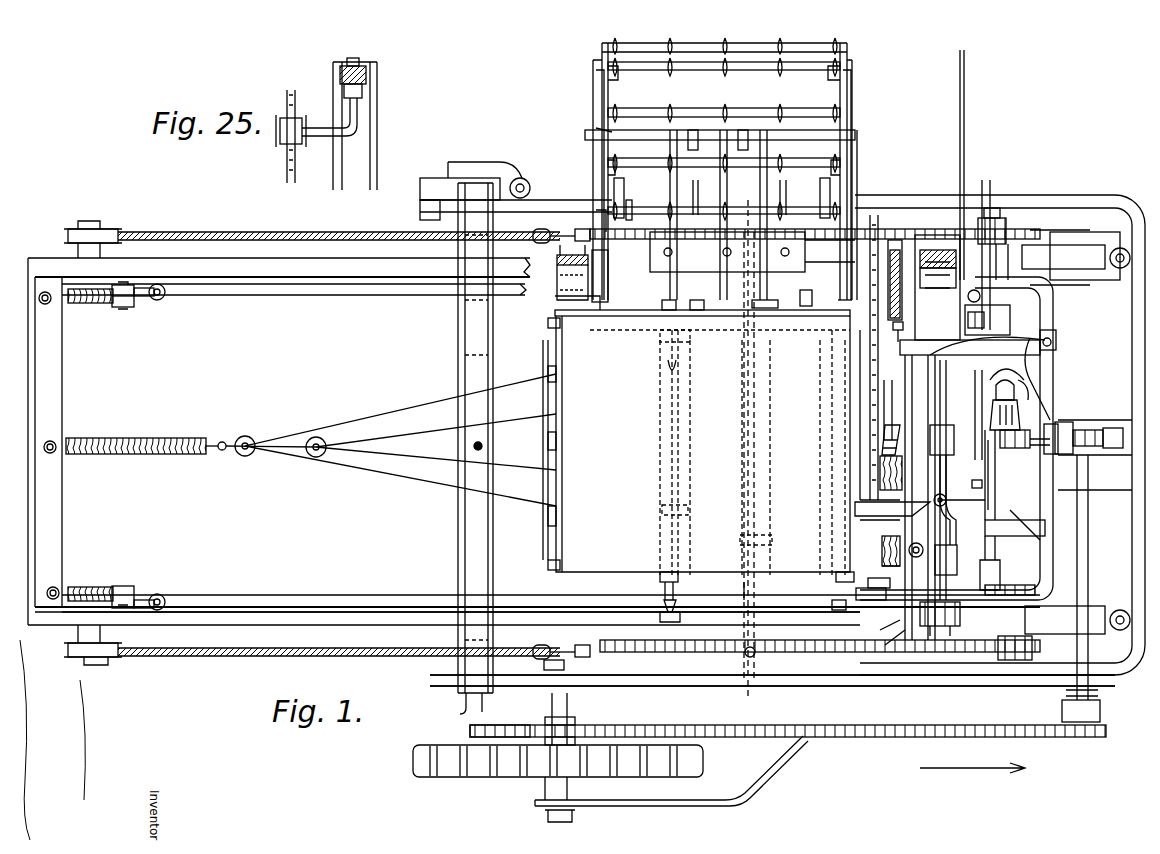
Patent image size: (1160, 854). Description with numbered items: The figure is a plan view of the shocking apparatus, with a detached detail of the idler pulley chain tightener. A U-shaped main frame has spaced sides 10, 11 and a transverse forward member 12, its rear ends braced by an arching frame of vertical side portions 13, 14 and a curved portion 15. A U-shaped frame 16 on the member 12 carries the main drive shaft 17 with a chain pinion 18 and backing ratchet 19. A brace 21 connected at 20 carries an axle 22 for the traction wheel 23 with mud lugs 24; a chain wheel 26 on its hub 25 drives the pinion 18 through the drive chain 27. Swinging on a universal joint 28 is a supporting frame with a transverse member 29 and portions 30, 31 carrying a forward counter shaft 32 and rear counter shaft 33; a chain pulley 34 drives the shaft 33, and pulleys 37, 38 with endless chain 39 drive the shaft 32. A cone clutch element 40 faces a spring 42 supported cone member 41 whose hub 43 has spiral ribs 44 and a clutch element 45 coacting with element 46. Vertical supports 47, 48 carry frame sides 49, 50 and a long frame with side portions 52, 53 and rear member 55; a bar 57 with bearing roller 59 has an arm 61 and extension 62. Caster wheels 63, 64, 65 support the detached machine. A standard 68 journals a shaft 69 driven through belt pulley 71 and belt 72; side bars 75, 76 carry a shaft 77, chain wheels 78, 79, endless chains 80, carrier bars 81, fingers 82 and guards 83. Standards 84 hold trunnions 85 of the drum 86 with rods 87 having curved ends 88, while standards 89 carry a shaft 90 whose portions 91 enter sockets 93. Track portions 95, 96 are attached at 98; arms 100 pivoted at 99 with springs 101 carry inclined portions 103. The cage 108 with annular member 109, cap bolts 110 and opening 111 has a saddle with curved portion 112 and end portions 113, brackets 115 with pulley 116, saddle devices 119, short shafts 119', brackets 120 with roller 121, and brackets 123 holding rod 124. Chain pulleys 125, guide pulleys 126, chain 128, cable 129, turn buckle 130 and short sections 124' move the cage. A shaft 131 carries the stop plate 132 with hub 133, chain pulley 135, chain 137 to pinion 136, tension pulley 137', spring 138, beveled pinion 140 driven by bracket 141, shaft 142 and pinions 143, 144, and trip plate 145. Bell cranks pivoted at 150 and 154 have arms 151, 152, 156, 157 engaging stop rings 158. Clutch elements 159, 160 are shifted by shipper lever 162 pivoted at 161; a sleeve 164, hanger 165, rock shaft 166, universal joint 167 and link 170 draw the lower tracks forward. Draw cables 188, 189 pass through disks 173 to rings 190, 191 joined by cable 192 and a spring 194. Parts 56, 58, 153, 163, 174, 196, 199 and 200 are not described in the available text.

In FIG. 1, the frame side 10 is at (552, 206).
In FIG. 1, the frame side 11 is at (735, 686).
In FIG. 1, the transverse forward member 12 is at (1140, 346).
In FIG. 1, the vertical side portion 13 is at (480, 178).
In FIG. 1, the vertical side portion 14 is at (462, 708).
In FIG. 1, the transverse upwardly curved portion 15 is at (460, 336).
In FIG. 1, the U-shaped frame 16 is at (1108, 400).
In FIG. 1, the main drive shaft 17 is at (1080, 538).
In FIG. 1, the chain pinion 18 is at (1090, 732).
In FIG. 1, the backing ratchet 19 is at (1100, 708).
In FIG. 1, the brace connection 20 is at (890, 686).
In FIG. 1, the brace 21 is at (776, 762).
In FIG. 1, the axle 22 is at (568, 702).
In FIG. 1, the traction wheel 23 is at (506, 778).
In FIG. 1, the mud lugs 24 is at (478, 780).
In FIG. 1, the hub 25 is at (576, 718).
In FIG. 1, the chain wheel 26 is at (522, 724).
In FIG. 1, the drive chain 27 is at (766, 724).
In FIG. 1, the universal joint 28 is at (1034, 444).
In FIG. 1, the transverse member 29 is at (1054, 352).
In FIG. 1, the rearwardly extending portion 30 is at (1008, 275).
In FIG. 1, the rearwardly extending portion 31 is at (1036, 602).
In FIG. 1, the forward counter shaft 32 is at (988, 550).
In FIG. 1, the rear counter shaft 33 is at (856, 466).
In FIG. 1, the chain pulley 34 is at (1110, 428).
In FIG. 1, the chain pulley 37 is at (873, 579).
In FIG. 1, the chain pulley 38 is at (1010, 586).
In FIG. 1, the endless chain 39 is at (939, 572).
In FIG. 1, the cone friction clutch element 40 is at (1027, 528).
In FIG. 1, the cone friction clutch member 41 is at (892, 513).
In FIG. 1, the spring 42 is at (886, 490).
In FIG. 1, the hub 43 is at (882, 548).
In FIG. 1, the spiral ribs 44 is at (882, 563).
In FIG. 1, the clutch element 45 is at (877, 626).
In FIG. 1, the opposing clutch element 46 is at (883, 638).
In FIG. 25, the vertical support 47 is at (340, 66).
In FIG. 1, the vertical support 47 is at (934, 250).
In FIG. 1, the vertical support 48 is at (950, 619).
In FIG. 25, the frame side 49 is at (372, 128).
In FIG. 1, the frame side 49 is at (956, 372).
In FIG. 25, the frame side 50 is at (336, 168).
In FIG. 1, the frame side 50 is at (936, 386).
In FIG. 1, the side portion 52 is at (352, 262).
In FIG. 1, the side portion 53 is at (345, 625).
In FIG. 1, the transverse member 55 is at (63, 380).
In FIG. 1, the gear 56 is at (1064, 420).
In FIG. 1, the bar 57 is at (981, 550).
In FIG. 1, the pin 58 is at (973, 574).
In FIG. 1, the bearing roller 59 is at (916, 543).
In FIG. 1, the arm 61 is at (991, 493).
In FIG. 1, the forwardly directed extension 62 is at (985, 482).
In FIG. 1, the caster wheel 63 is at (446, 168).
In FIG. 1, the caster wheel 64 is at (1076, 257).
In FIG. 1, the caster wheel 65 is at (1077, 620).
In FIG. 1, the standard 68 is at (554, 251).
In FIG. 1, the shaft 69 is at (776, 296).
In FIG. 1, the belt pulley 71 is at (903, 284).
In FIG. 1, the belt 72 is at (900, 250).
In FIG. 1, the side bar 75 is at (594, 84).
In FIG. 1, the side bar 76 is at (856, 88).
In FIG. 1, the shaft 77 is at (762, 84).
In FIG. 1, the chain wheel 78 is at (614, 300).
In FIG. 1, the chain wheel 79 is at (601, 52).
In FIG. 1, the endless chains 80 is at (626, 184).
In FIG. 1, the carrier bars 81 is at (746, 70).
In FIG. 1, the fingers 82 is at (722, 76).
In FIG. 1, the guards 83 is at (596, 110).
In FIG. 1, the standards 84 is at (600, 215).
In FIG. 1, the trunnions 85 is at (708, 250).
In FIG. 1, the drum 86 is at (717, 243).
In FIG. 1, the rods 87 is at (678, 204).
In FIG. 1, the curved ends 88 is at (640, 210).
In FIG. 1, the standards 89 is at (590, 136).
In FIG. 1, the shaft 90 is at (598, 136).
In FIG. 1, the diverging portion 91 is at (699, 184).
In FIG. 1, the sockets 93 is at (780, 252).
In FIG. 1, the horizontal portion 95 is at (762, 603).
In FIG. 1, the inclined portion 96 is at (350, 296).
In FIG. 1, the attachment 98 is at (163, 298).
In FIG. 1, the pivot 99 is at (116, 308).
In FIG. 1, the arms 100 is at (122, 283).
In FIG. 1, the spring 101 is at (88, 445).
In FIG. 1, the inclined portion 103 is at (138, 298).
In FIG. 1, the cage 108 is at (562, 310).
In FIG. 1, the annular member 109 is at (563, 336).
In FIG. 1, the cap bolts 110 is at (546, 322).
In FIG. 1, the opening 111 is at (638, 372).
In FIG. 1, the curved intermediate portion 112 is at (820, 478).
In FIG. 1, the vertical end portions 113 is at (800, 300).
In FIG. 1, the brackets 115 is at (867, 597).
In FIG. 1, the grooved guide pulley 116 is at (832, 608).
In FIG. 1, the saddle devices 119 is at (678, 452).
In FIG. 1, the short shafts 119' is at (690, 424).
In FIG. 1, the brackets 120 is at (660, 300).
In FIG. 1, the grooved roller 121 is at (698, 290).
In FIG. 1, the brackets 123 is at (770, 550).
In FIG. 1, the rod 124 is at (736, 456).
In FIG. 1, the short cable sections 124' is at (761, 450).
In FIG. 1, the chain pulleys 125 is at (1028, 220).
In FIG. 1, the guide pulleys 126 is at (92, 228).
In FIG. 1, the chain sections 128 is at (898, 229).
In FIG. 1, the cable 129 is at (284, 229).
In FIG. 1, the turn buckle 130 is at (556, 228).
In FIG. 1, the shaft 131 is at (945, 480).
In FIG. 1, the stop plate 132 is at (834, 354).
In FIG. 1, the hub 133 is at (854, 440).
In FIG. 1, the chain pulley 135 is at (884, 416).
In FIG. 1, the chain pinion 136 is at (894, 230).
In FIG. 25, the endless chain 137 is at (263, 139).
In FIG. 1, the endless chain 137 is at (862, 357).
In FIG. 25, the tension pulley 137' is at (267, 139).
In FIG. 1, the spring 138 is at (898, 428).
In FIG. 1, the beveled pinion 140 is at (980, 475).
In FIG. 1, the bracket 141 is at (898, 404).
In FIG. 1, the obliquely directed shaft 142 is at (1000, 390).
In FIG. 1, the beveled pinion 143 is at (1029, 393).
In FIG. 1, the beveled pinion 144 is at (1046, 340).
In FIG. 1, the trip plate 145 is at (988, 390).
In FIG. 1, the pivot 150 is at (934, 500).
In FIG. 1, the short arm 151 is at (968, 504).
In FIG. 1, the long arm 152 is at (957, 489).
In FIG. 1, the block 153 is at (943, 434).
In FIG. 1, the pivot 154 is at (1052, 342).
In FIG. 1, the arm 156 is at (987, 337).
In FIG. 1, the arm 157 is at (1040, 384).
In FIG. 1, the stop rings 158 is at (1055, 440).
In FIG. 1, the clutch element 159 is at (941, 309).
In FIG. 1, the opposing clutch element 160 is at (937, 287).
In FIG. 1, the pivot 161 is at (890, 328).
In FIG. 1, the shipper lever 162 is at (896, 341).
In FIG. 1, the bar 163 is at (970, 347).
In FIG. 1, the sleeve 164 is at (869, 372).
In FIG. 1, the hanger 165 is at (1010, 318).
In FIG. 1, the rock shaft 166 is at (965, 120).
In FIG. 1, the universal joint 167 is at (984, 210).
In FIG. 1, the link 170 is at (943, 338).
In FIG. 1, the disks 173 is at (542, 354).
In FIG. 1, the roller 174 is at (547, 370).
In FIG. 1, the draw cable 188 is at (390, 408).
In FIG. 1, the draw cable 189 is at (432, 404).
In FIG. 1, the ring 190 is at (316, 437).
In FIG. 1, the ring 191 is at (245, 436).
In FIG. 1, the cable section 192 is at (292, 452).
In FIG. 1, the spring 194 is at (170, 437).
In FIG. 1, the hole 196 is at (473, 446).
In FIG. 1, the block 199 is at (942, 560).
In FIG. 1, the pin 200 is at (908, 548).